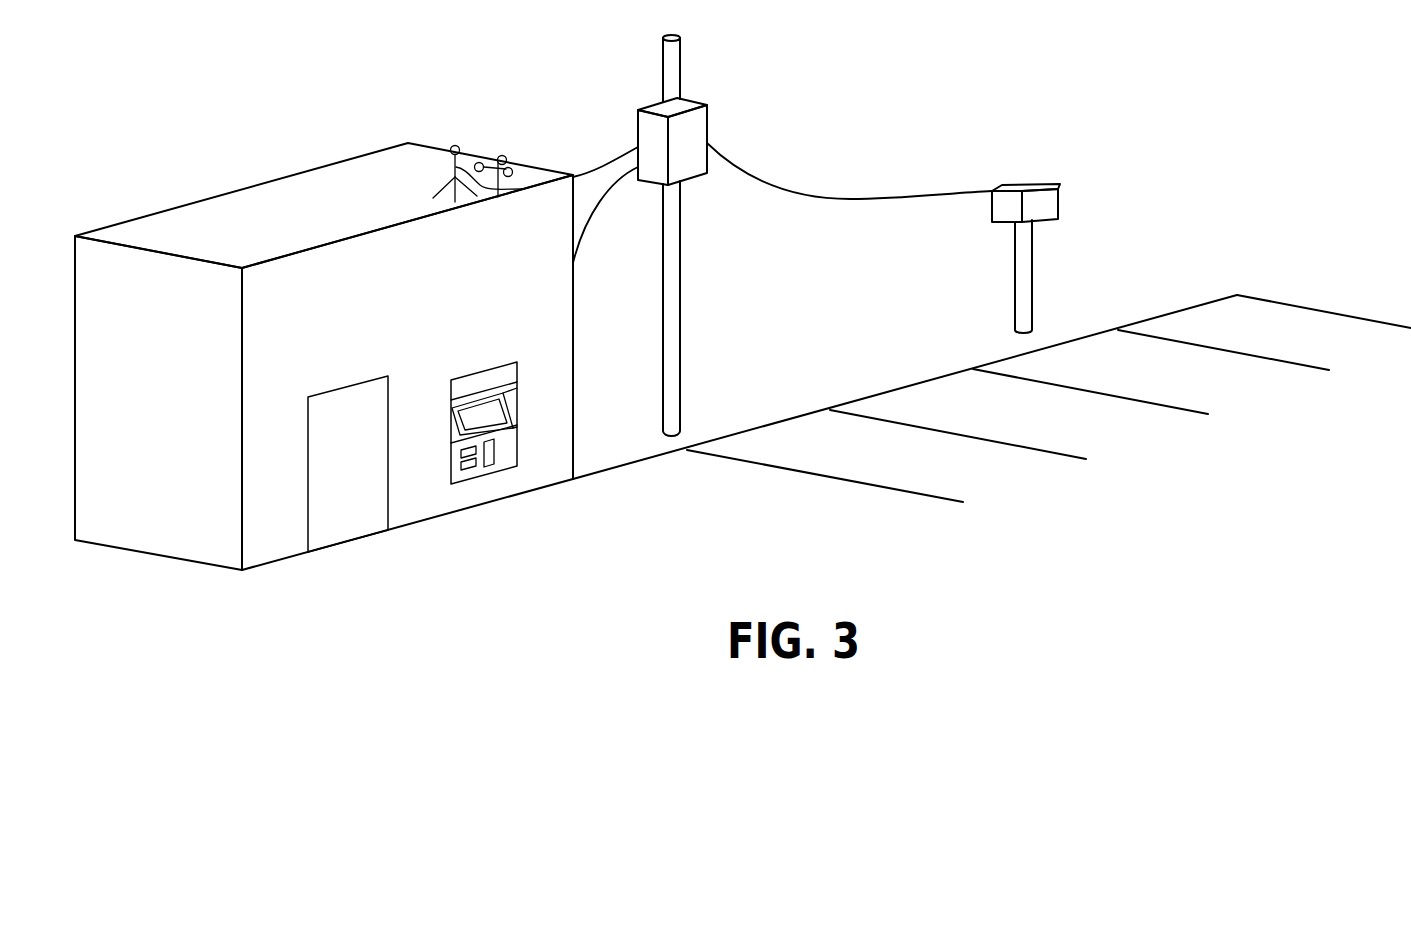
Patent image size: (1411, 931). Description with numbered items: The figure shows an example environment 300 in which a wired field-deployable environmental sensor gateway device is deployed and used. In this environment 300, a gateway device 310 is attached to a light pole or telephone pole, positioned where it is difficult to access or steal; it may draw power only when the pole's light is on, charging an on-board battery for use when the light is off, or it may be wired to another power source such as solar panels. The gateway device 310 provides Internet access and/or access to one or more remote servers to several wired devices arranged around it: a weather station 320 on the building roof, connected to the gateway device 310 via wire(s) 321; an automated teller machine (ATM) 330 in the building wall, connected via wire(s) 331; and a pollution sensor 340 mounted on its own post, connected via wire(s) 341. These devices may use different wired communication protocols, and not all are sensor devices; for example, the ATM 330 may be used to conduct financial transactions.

The environment 300 is at (1254, 521).
The gateway device 310 is at (707, 120).
The weather station 320 is at (503, 156).
The wire(s) 321 is at (617, 160).
The automated teller machine (ATM) 330 is at (507, 363).
The wire(s) 331 is at (600, 207).
The pollution sensor 340 is at (1049, 222).
The wire(s) 341 is at (858, 200).